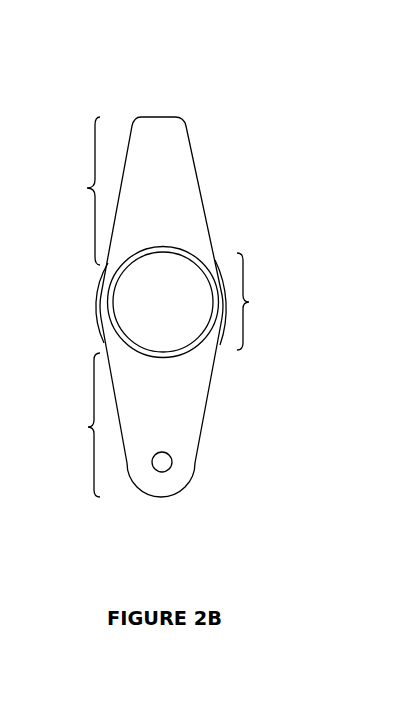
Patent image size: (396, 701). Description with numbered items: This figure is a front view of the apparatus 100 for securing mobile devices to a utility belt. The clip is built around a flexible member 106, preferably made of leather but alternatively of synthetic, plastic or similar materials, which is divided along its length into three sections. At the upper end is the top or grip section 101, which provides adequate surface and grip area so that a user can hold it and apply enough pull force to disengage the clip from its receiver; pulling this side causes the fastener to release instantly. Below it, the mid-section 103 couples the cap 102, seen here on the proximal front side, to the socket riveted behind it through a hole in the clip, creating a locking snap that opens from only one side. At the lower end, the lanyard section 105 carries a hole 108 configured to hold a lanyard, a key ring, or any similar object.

The apparatus for securing mobile devices to a utility belt 100 is at (181, 274).
The top (or grip) section 101 is at (71, 191).
The cap 102 is at (123, 292).
The mid-section 103 is at (193, 301).
The lanyard section 105 is at (66, 425).
The flexible member 106 is at (186, 196).
The hole 108 is at (177, 453).